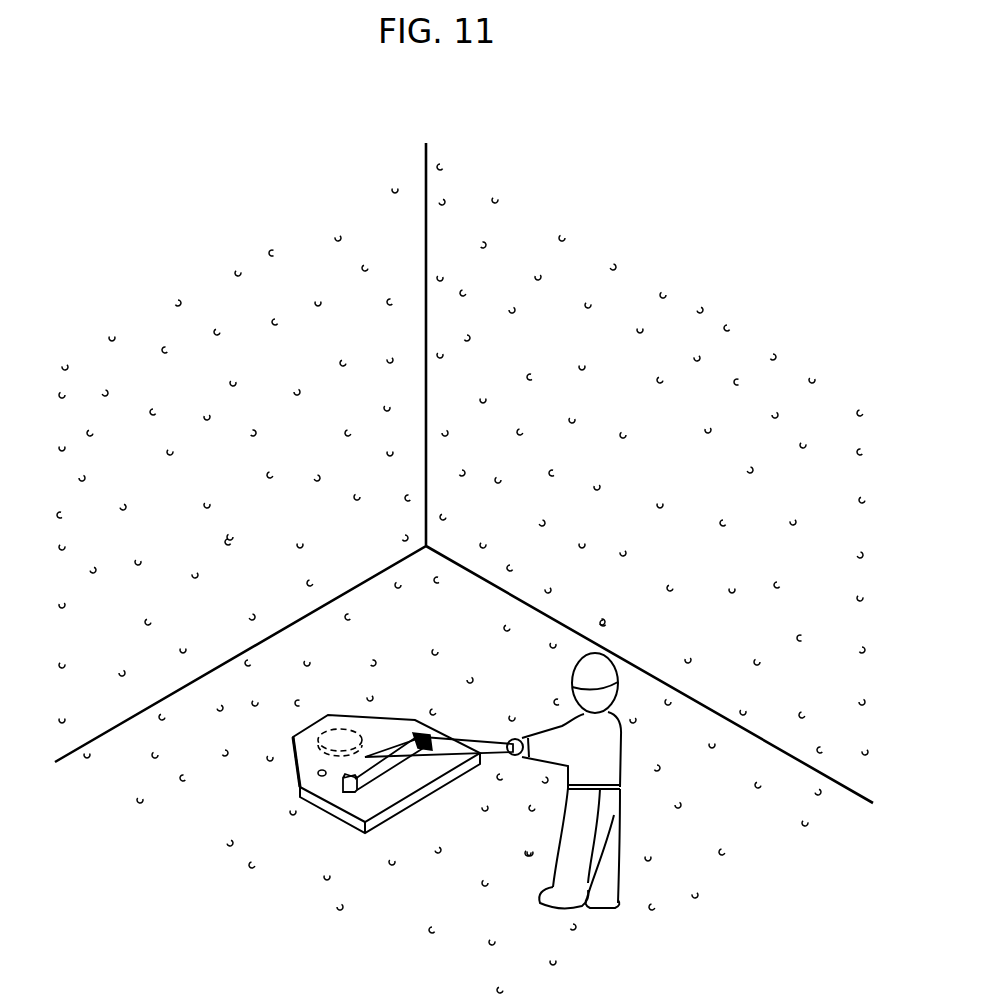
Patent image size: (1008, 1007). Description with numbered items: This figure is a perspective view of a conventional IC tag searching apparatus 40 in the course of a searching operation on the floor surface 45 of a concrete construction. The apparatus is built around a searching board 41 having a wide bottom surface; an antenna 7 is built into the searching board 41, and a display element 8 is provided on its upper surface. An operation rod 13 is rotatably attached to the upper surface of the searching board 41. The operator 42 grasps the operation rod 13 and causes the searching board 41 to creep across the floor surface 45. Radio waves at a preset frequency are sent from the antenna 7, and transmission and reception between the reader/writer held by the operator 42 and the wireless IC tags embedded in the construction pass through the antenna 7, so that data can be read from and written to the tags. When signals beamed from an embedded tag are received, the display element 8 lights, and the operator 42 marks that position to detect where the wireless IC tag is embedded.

The antenna 7 is at (320, 747).
The display element 8 is at (316, 774).
The operation rod 13 is at (477, 743).
The IC tag searching apparatus 40 is at (450, 737).
The searching board 41 is at (397, 728).
The operator 42 is at (622, 760).
The floor surface 45 is at (358, 932).